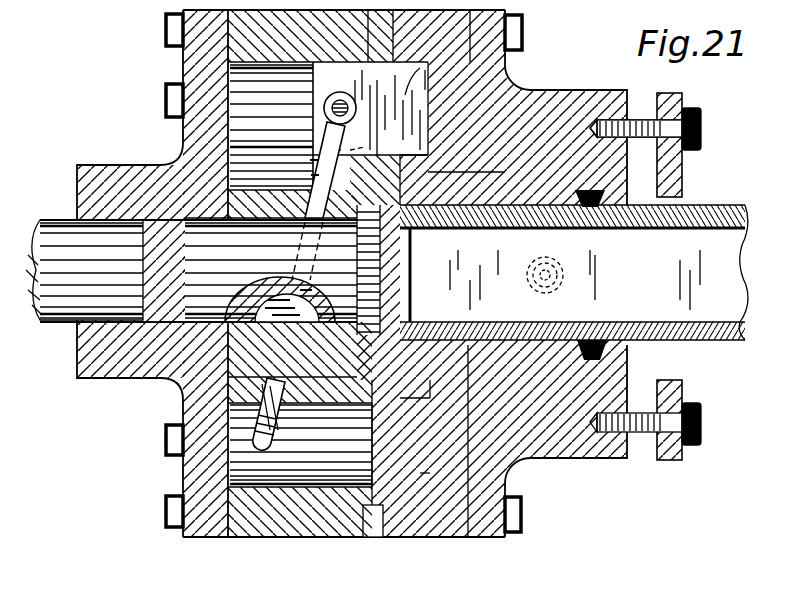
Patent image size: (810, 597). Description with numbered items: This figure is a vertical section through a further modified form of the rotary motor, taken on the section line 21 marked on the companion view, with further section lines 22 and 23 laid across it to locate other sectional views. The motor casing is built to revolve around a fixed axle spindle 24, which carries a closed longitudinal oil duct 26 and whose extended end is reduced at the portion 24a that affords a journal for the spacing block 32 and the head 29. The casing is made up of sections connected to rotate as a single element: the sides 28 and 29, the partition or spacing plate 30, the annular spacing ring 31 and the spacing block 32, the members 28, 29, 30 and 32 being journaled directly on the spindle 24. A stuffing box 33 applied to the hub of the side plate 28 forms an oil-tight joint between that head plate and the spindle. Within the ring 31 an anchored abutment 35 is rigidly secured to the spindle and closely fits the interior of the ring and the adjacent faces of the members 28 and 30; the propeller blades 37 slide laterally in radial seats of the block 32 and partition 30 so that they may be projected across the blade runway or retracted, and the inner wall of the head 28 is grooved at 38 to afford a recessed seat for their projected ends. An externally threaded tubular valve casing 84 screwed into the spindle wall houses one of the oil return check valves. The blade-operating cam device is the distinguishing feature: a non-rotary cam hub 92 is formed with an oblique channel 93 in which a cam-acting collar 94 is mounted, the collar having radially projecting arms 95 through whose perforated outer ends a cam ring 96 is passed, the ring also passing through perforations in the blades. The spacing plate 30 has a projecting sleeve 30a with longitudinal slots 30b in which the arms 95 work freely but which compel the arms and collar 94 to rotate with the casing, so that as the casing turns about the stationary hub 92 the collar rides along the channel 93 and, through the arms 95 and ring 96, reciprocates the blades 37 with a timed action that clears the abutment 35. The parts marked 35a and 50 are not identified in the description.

The section line 21 is at (367, 596).
The section line 22 is at (340, 62).
The section line 23 is at (445, 157).
The axle spindle 24 is at (712, 338).
The reduced portion of spindle 24a is at (112, 402).
The oil duct 26 is at (575, 280).
The side head plate 28 is at (516, 90).
The side head 29 is at (200, 57).
The partition plate 30 is at (376, 522).
The projecting sleeve 30a is at (163, 413).
The longitudinal slots 30b is at (172, 142).
The annular spacing ring 31 is at (417, 82).
The spacing block 32 is at (288, 40).
The stuffing box 33 is at (637, 197).
The anchored abutment 35 is at (420, 473).
The passage branch 35a is at (466, 114).
The propeller blades 37 is at (390, 110).
The grooves 38 is at (483, 72).
The shaft 50 is at (62, 297).
The tubular valve casing 84 is at (565, 268).
The cam hub 92 is at (232, 370).
The oblique channel 93 is at (310, 200).
The cam-acting collar 94 is at (350, 150).
The radially projecting arms 95 is at (343, 92).
The cam ring 96 is at (270, 443).